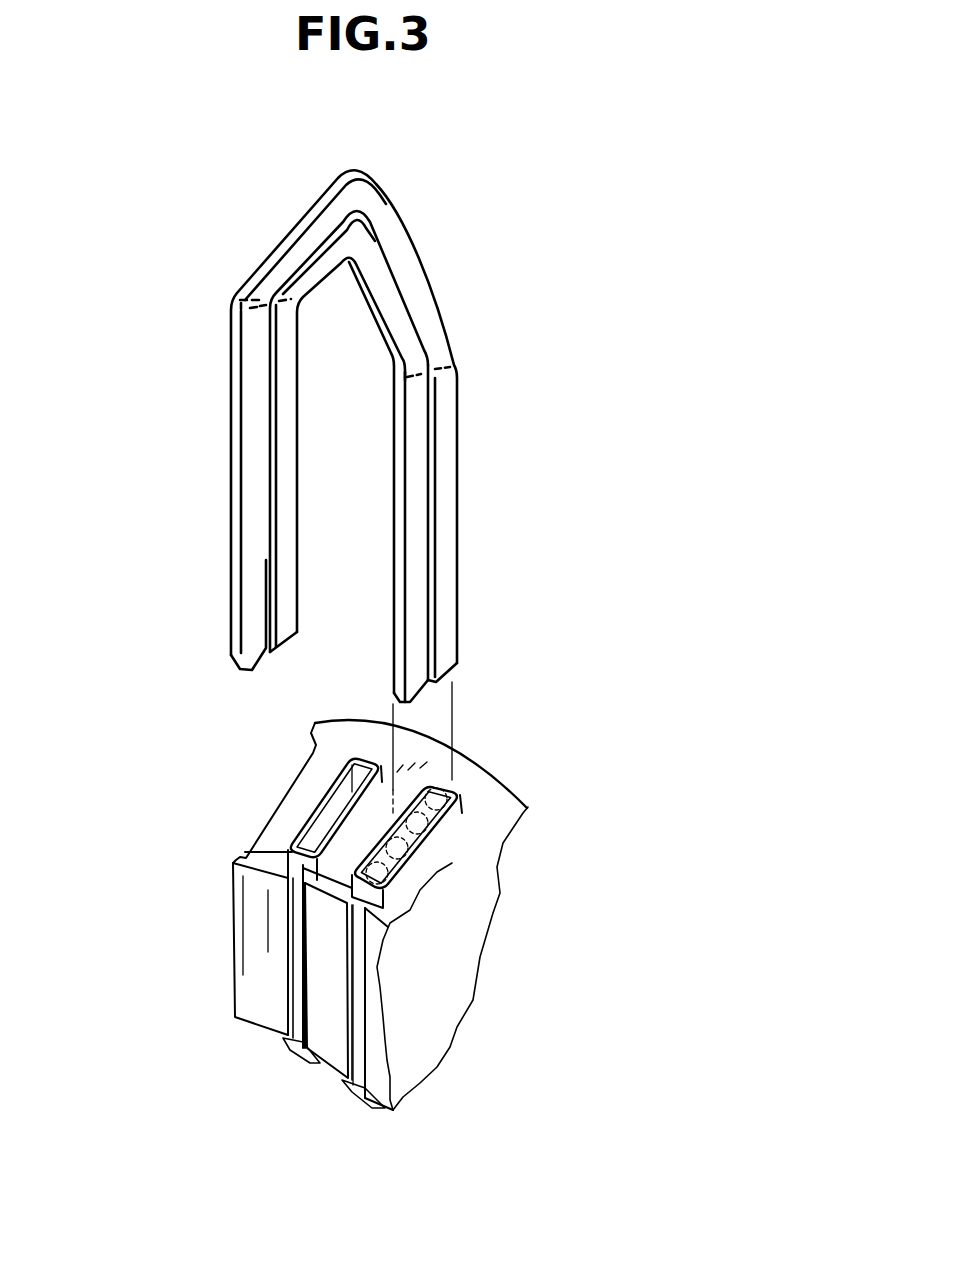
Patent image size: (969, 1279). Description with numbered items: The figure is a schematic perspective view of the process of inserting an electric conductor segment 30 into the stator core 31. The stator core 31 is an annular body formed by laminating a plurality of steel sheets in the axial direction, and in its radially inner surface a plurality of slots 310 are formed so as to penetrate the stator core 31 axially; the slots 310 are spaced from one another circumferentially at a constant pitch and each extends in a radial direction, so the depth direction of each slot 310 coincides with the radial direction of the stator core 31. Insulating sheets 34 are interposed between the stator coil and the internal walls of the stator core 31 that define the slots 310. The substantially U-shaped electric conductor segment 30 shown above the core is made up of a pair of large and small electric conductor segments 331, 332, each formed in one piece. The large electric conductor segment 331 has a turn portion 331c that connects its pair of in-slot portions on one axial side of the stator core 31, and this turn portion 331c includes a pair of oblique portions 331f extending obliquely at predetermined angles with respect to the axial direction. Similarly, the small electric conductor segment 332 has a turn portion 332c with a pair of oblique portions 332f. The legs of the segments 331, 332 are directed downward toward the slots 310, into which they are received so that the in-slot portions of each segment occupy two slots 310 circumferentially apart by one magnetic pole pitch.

The electric conductor segment 30 is at (361, 394).
The large electric conductor segment 331 is at (404, 260).
The small electric conductor segment 332 is at (415, 353).
The turn portion 331c is at (363, 183).
The turn portion 332c is at (358, 228).
The oblique portions 331f is at (304, 247).
The oblique portions 332f is at (305, 282).
The stator core 31 is at (500, 803).
The insulating sheet 34 is at (453, 785).
The slot 310 is at (300, 950).